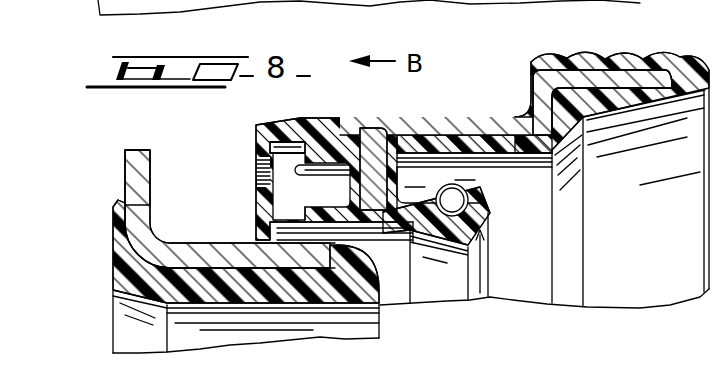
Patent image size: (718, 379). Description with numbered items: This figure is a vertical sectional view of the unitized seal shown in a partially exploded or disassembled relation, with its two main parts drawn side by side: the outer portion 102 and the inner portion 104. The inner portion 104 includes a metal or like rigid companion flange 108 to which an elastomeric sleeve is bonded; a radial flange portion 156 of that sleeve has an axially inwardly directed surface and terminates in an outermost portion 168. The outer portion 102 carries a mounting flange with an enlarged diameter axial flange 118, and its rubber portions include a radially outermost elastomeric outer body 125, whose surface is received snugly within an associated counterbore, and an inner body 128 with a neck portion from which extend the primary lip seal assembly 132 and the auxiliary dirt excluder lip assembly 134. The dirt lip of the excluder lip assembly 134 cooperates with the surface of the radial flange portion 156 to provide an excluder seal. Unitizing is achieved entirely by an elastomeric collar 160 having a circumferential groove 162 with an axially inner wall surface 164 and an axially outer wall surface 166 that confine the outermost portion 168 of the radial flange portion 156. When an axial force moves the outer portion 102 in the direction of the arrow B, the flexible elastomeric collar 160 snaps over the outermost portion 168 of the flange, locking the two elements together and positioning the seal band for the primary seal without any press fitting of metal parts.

The outer portion 102 is at (452, 171).
The inner portion 104 is at (100, 236).
The companion flange 108 is at (392, 276).
The axial flange 118 is at (616, 78).
The elastomeric outer body 125 is at (575, 38).
The inner body 128 is at (553, 125).
The primary lip seal assembly 132 is at (520, 193).
The dirt excluder lip assembly 134 is at (292, 199).
The radial flange portion 156 is at (141, 233).
The elastomeric collar 160 is at (281, 116).
The circumferential groove 162 is at (284, 160).
The axially inner wall surface 164 is at (311, 186).
The axially outer wall surface 166 is at (272, 151).
The outermost portion 168 is at (133, 173).